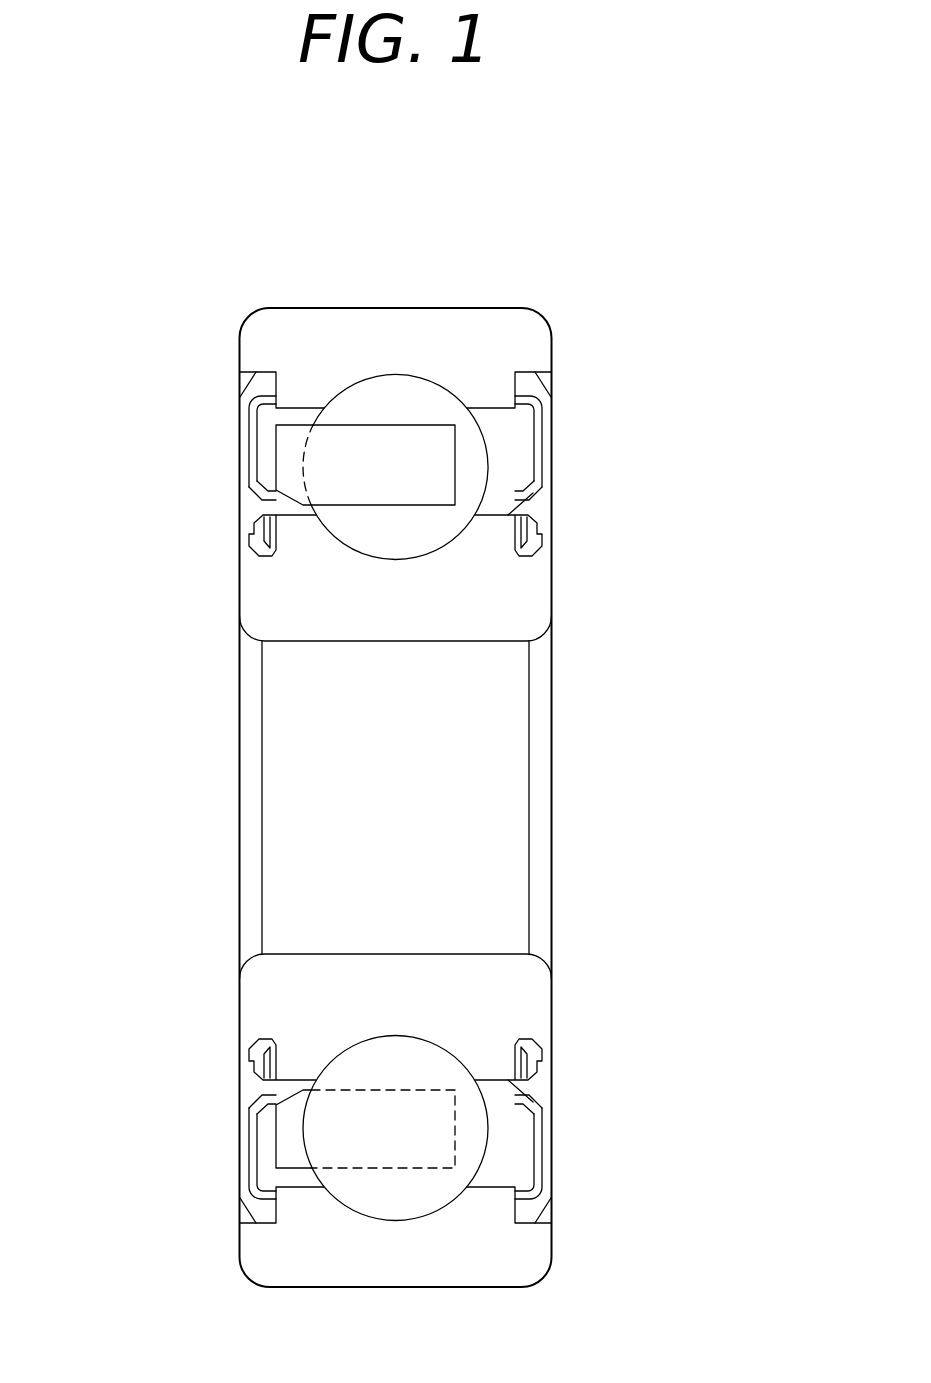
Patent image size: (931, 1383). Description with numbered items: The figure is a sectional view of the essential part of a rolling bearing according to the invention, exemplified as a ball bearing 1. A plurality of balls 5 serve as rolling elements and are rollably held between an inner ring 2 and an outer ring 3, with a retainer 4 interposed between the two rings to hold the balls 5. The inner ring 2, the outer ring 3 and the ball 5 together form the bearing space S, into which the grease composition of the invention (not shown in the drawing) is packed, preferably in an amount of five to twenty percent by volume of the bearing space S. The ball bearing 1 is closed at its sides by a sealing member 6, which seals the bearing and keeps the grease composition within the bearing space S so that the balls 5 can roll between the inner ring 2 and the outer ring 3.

The ball bearing 1 is at (690, 437).
The inner ring 2 is at (285, 598).
The outer ring 3 is at (290, 353).
The retainer 4 is at (340, 487).
The ball 5 is at (465, 453).
The sealing member 6 is at (245, 437).
The bearing space S is at (508, 480).